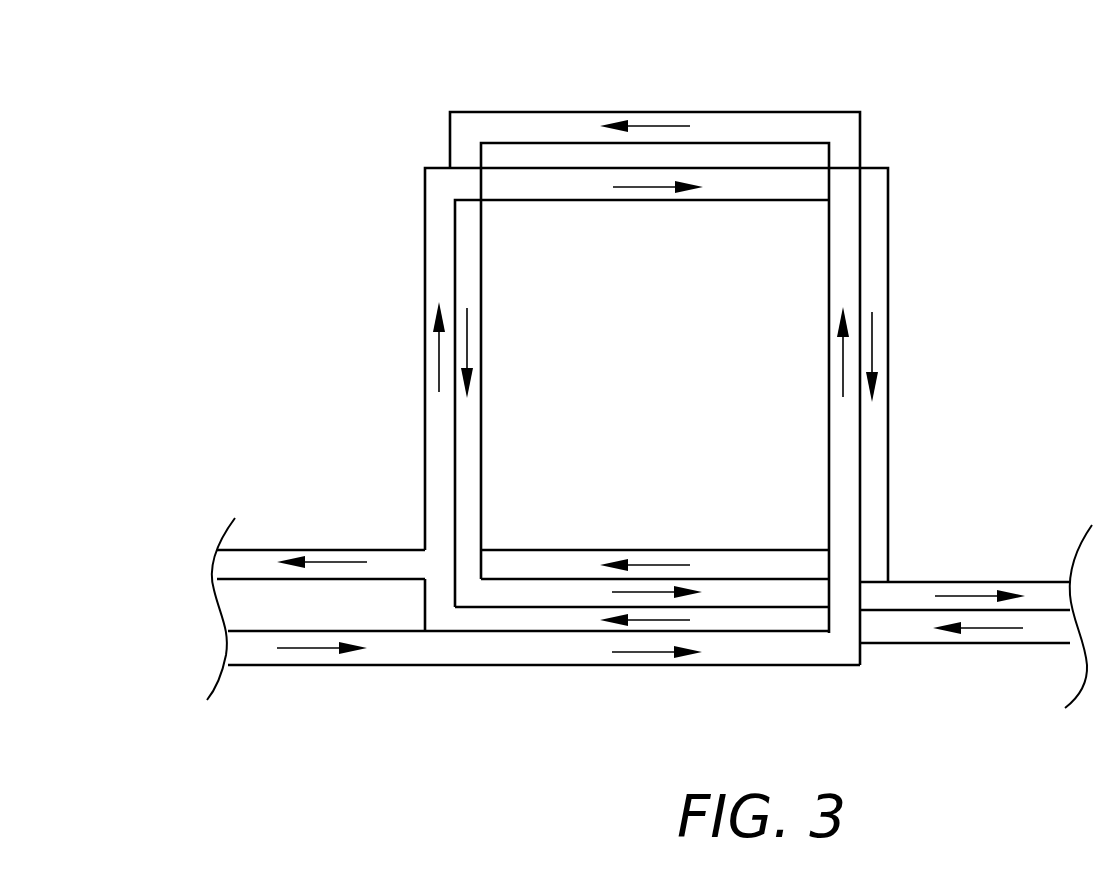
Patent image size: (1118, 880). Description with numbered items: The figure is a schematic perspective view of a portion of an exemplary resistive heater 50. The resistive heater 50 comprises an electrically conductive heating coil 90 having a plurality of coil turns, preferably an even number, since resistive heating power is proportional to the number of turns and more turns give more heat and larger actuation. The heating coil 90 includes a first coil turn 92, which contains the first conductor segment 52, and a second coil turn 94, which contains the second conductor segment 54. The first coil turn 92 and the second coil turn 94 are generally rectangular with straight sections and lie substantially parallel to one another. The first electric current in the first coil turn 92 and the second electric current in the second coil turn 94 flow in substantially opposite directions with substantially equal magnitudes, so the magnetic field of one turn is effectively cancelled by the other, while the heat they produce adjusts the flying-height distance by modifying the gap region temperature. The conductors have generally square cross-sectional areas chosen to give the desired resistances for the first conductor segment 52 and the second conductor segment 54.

The resistive heater 50 is at (322, 98).
The first conductor segment 52 is at (538, 655).
The second conductor segment 54 is at (520, 622).
The heating coil 90 is at (796, 58).
The first coil turn 92 is at (701, 112).
The second coil turn 94 is at (544, 168).